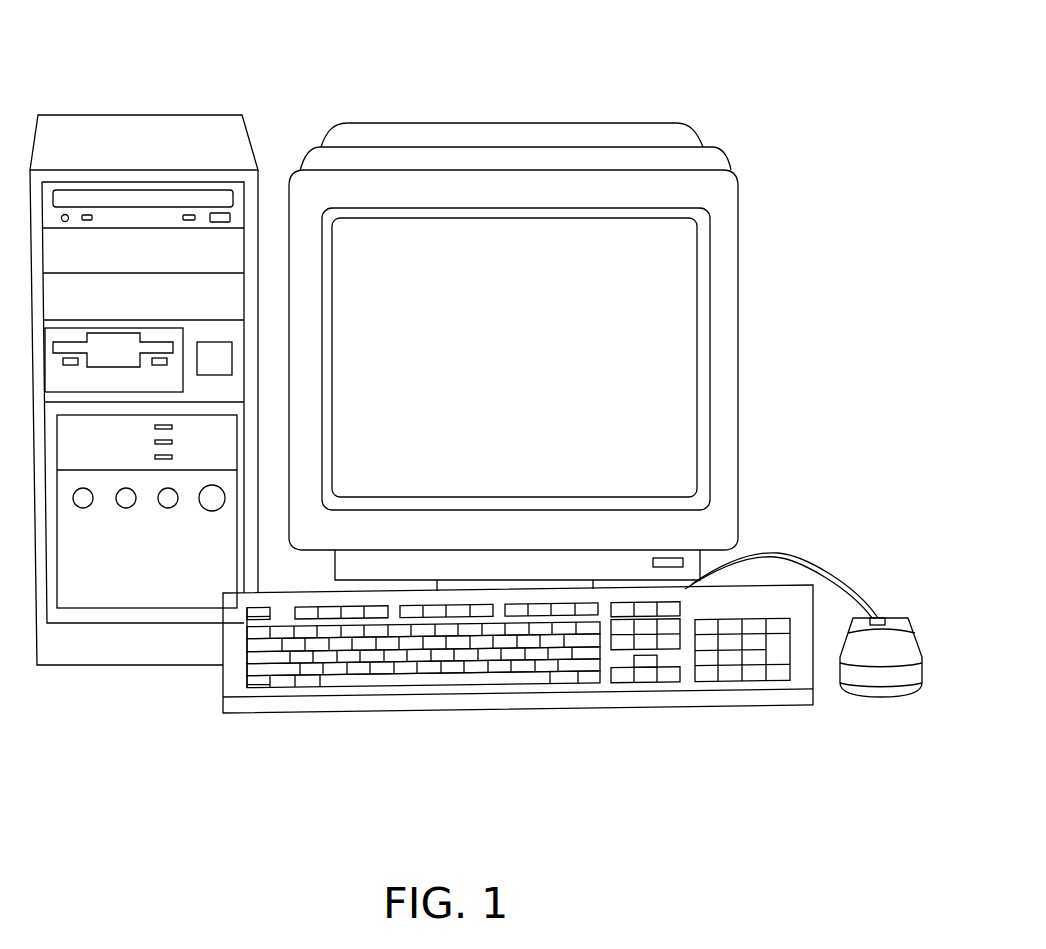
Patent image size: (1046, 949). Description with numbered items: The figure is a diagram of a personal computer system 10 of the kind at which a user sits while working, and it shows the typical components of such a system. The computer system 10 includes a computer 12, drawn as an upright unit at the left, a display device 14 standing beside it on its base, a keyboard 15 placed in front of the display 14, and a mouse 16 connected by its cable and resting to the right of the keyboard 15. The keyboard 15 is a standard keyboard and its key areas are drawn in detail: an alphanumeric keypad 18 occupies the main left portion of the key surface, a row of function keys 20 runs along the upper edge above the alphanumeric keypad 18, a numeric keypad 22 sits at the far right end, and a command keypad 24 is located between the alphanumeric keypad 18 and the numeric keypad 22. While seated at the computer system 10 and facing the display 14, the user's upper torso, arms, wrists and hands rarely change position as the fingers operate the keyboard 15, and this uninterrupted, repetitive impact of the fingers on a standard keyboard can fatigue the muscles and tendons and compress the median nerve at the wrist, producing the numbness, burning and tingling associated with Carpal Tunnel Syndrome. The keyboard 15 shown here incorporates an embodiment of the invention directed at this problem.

The personal computer system 10 is at (763, 96).
The computer 12 is at (210, 130).
The display device 14 is at (668, 361).
The keyboard 15 is at (214, 686).
The mouse 16 is at (893, 650).
The alphanumeric keypad 18 is at (279, 686).
The row of function keys 20 is at (234, 607).
The numeric keypad 22 is at (755, 681).
The command keypad 24 is at (650, 687).